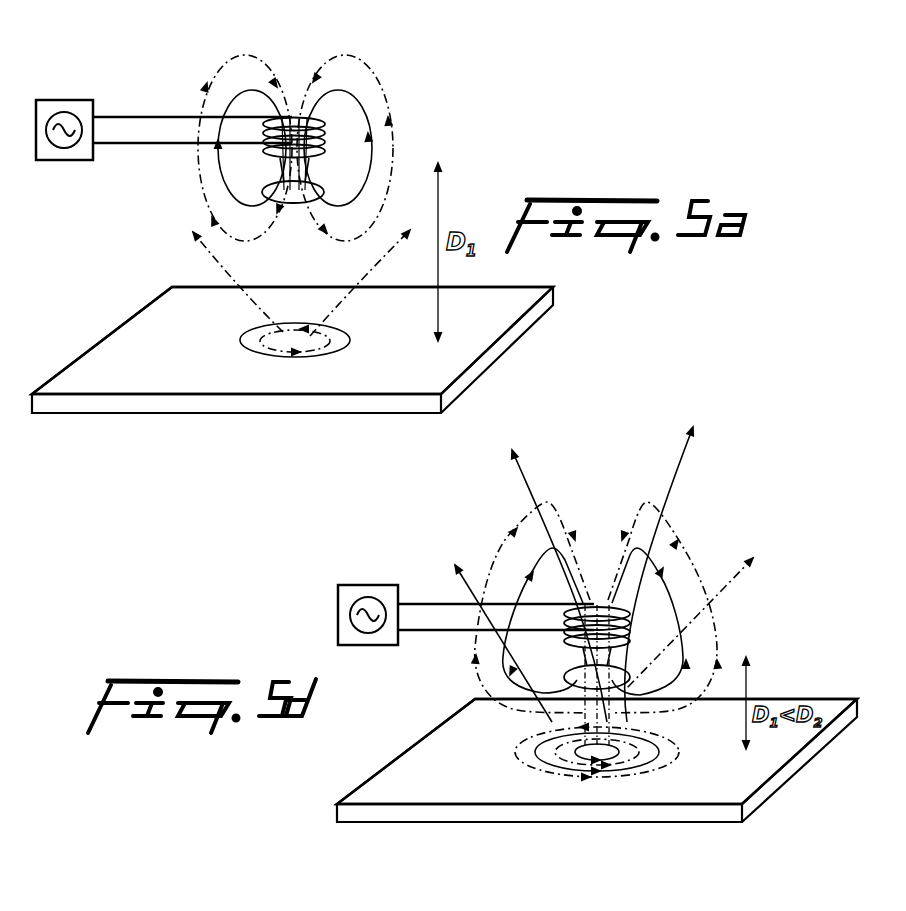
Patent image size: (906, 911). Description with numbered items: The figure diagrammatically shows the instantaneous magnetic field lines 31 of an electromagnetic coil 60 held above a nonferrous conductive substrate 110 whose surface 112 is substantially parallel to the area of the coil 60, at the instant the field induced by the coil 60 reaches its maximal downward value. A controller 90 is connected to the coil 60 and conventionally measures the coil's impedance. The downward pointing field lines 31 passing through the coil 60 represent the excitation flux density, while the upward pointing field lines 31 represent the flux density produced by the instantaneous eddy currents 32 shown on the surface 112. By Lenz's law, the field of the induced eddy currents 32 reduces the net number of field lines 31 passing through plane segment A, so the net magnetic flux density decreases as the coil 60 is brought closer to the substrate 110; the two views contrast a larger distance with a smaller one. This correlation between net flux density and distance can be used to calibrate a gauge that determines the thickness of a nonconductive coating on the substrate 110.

In FIG. 5A, the controller 90 is at (72, 104).
In FIG. 5B, the controller 90 is at (352, 588).
In FIG. 5A, the coil 60 is at (326, 127).
In FIG. 5B, the coil 60 is at (627, 620).
In FIG. 5A, the magnetic field lines 31 is at (388, 79).
In FIG. 5B, the magnetic field lines 31 is at (665, 520).
In FIG. 5A, the plane segment A is at (342, 150).
In FIG. 5B, the plane segment A is at (627, 657).
In FIG. 5A, the eddy currents 32 is at (240, 350).
In FIG. 5B, the eddy currents 32 is at (525, 763).
In FIG. 5A, the nonferrous conductive substrate 110 is at (147, 406).
In FIG. 5B, the nonferrous conductive substrate 110 is at (778, 780).
In FIG. 5A, the surface 112 is at (500, 315).
In FIG. 5B, the surface 112 is at (382, 788).